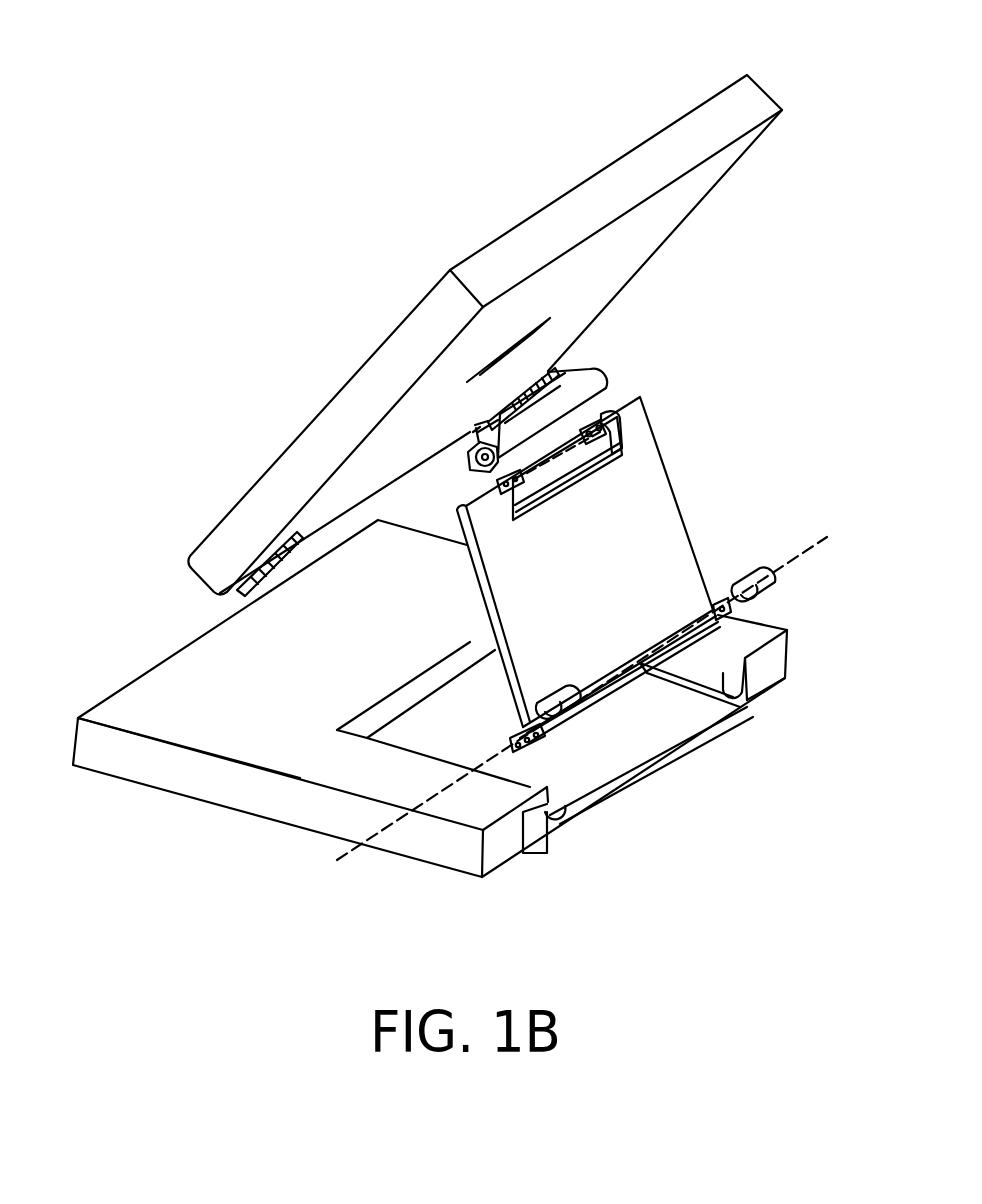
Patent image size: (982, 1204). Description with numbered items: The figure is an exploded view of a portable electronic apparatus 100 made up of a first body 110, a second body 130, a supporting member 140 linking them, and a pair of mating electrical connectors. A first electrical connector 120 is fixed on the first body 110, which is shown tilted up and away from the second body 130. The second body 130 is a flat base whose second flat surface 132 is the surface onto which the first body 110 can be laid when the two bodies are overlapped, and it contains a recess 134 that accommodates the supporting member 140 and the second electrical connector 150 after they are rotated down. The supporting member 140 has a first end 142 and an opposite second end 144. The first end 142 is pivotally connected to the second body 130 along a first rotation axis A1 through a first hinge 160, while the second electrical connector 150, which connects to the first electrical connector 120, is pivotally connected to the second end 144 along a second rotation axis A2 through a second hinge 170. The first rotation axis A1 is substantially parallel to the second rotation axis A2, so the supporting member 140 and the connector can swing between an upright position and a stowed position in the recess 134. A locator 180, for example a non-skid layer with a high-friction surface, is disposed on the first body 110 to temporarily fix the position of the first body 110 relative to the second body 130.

The portable electronic apparatus 100 is at (918, 853).
The first body 110 is at (755, 103).
The first electrical connector 120 is at (560, 330).
The second body 130 is at (740, 632).
The second flat surface 132 is at (149, 705).
The recess 134 is at (417, 727).
The supporting member 140 is at (673, 508).
The first end 142 is at (620, 650).
The second end 144 is at (495, 495).
The second electrical connector 150 is at (592, 398).
The first hinge 160 is at (530, 747).
The second hinge 170 is at (475, 450).
The locator 180 is at (562, 372).
The first rotation axis A1 is at (822, 543).
The second rotation axis A2 is at (592, 440).